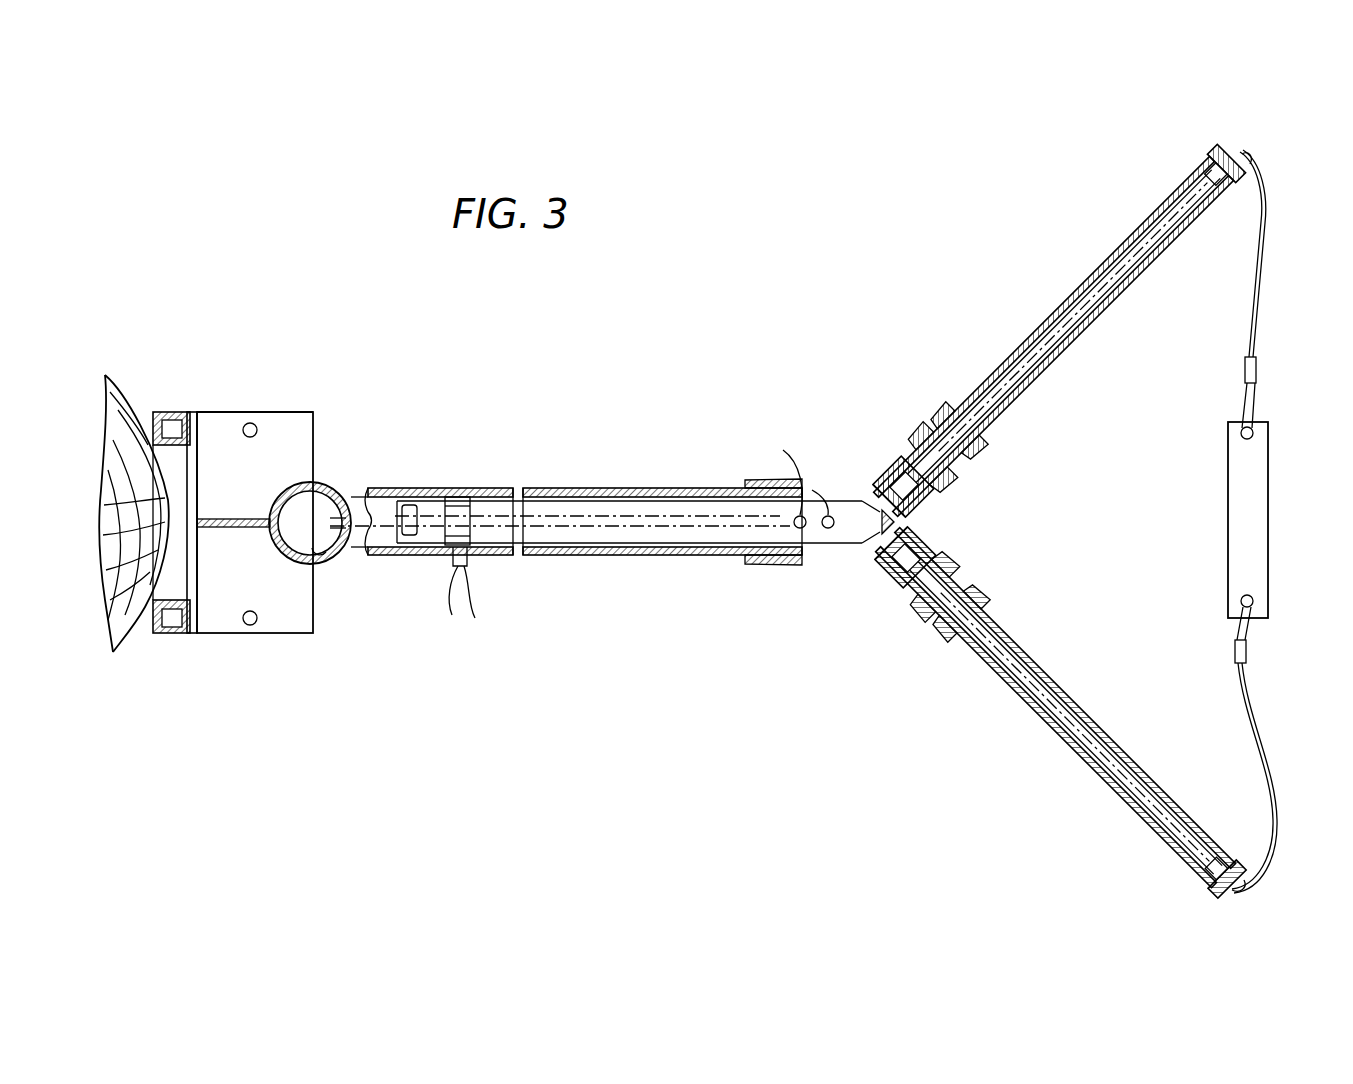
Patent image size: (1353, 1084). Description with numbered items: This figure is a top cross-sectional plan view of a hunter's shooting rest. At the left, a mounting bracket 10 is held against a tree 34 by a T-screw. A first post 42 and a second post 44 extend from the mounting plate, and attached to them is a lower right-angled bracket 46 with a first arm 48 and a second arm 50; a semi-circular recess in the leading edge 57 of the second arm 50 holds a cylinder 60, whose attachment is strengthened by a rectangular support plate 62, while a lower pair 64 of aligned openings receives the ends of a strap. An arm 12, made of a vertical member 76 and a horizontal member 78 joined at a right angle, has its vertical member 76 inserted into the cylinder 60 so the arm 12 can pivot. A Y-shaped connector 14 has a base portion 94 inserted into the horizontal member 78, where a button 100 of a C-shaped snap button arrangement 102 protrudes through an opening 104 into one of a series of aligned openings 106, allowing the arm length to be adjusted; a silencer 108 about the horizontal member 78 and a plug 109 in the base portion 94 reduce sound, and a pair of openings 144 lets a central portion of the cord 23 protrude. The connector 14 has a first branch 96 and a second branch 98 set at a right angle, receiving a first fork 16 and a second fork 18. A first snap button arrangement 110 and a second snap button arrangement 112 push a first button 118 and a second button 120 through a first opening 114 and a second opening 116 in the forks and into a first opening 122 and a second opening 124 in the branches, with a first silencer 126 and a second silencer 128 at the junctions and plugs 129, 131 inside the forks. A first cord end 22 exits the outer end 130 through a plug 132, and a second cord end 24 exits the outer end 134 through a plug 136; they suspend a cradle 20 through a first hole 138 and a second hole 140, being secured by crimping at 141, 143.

The mounting bracket 10 is at (228, 790).
The arm 12 is at (645, 740).
The Y-shaped connector 14 is at (905, 523).
The first fork 16 is at (1103, 779).
The second fork 18 is at (1080, 290).
The cradle 20 is at (1270, 490).
The first cord end 22 is at (1277, 783).
The cord 23 is at (650, 518).
The second cord end 24 is at (1262, 270).
The tree 34 is at (112, 640).
The first post 42 is at (160, 636).
The second post 44 is at (165, 410).
The lower right-angled bracket 46 is at (193, 412).
The first arm 48 is at (192, 636).
The second arm 50 is at (300, 634).
The leading edge 57 is at (314, 412).
The cylinder 60 is at (338, 488).
The support plate 62 is at (262, 518).
The lower pair of aligned openings 64 is at (252, 422).
The vertical member 76 is at (323, 553).
The horizontal member 78 is at (700, 556).
The base portion 94 is at (681, 487).
The first branch 96 is at (950, 562).
The second branch 98 is at (940, 480).
The button 100 is at (467, 600).
The C-shaped snap button arrangement 102 is at (458, 497).
The opening 104 is at (466, 560).
The series of aligned openings 106 is at (440, 556).
The silencer 108 is at (770, 565).
The plug 109 is at (410, 503).
The first snap button arrangement 110 is at (975, 578).
The second snap button arrangement 112 is at (985, 458).
The first opening 114 is at (912, 600).
The second opening 116 is at (920, 433).
The first button 118 is at (905, 578).
The second button 120 is at (912, 441).
The first opening 122 is at (895, 560).
The second opening 124 is at (908, 445).
The first silencer 126 is at (990, 597).
The second silencer 128 is at (940, 402).
The plug 129 is at (832, 556).
The outer end 130 is at (1222, 900).
The plug 131 is at (872, 490).
The plug 132 is at (1240, 888).
The outer end 134 is at (1232, 150).
The plug 136 is at (1248, 158).
The first hole 138 is at (1242, 600).
The second hole 140 is at (1243, 433).
The crimp 141 is at (1248, 652).
The crimp 143 is at (1258, 370).
The pair of openings 144 is at (783, 450).